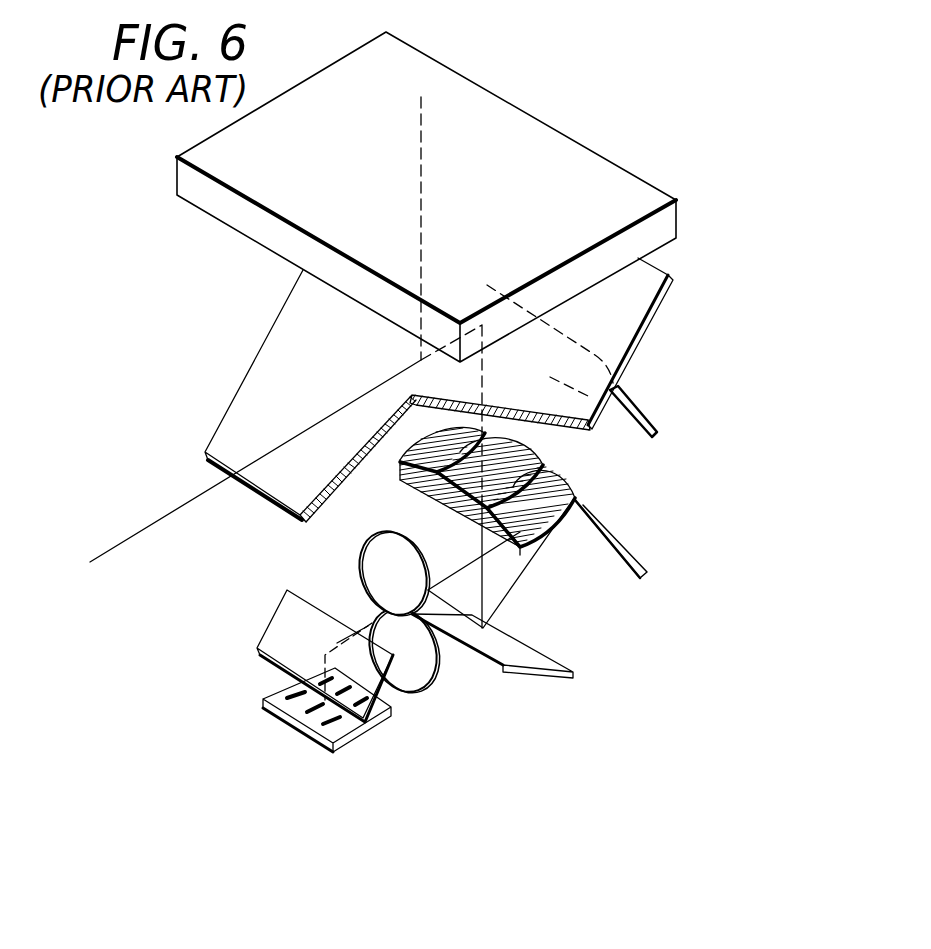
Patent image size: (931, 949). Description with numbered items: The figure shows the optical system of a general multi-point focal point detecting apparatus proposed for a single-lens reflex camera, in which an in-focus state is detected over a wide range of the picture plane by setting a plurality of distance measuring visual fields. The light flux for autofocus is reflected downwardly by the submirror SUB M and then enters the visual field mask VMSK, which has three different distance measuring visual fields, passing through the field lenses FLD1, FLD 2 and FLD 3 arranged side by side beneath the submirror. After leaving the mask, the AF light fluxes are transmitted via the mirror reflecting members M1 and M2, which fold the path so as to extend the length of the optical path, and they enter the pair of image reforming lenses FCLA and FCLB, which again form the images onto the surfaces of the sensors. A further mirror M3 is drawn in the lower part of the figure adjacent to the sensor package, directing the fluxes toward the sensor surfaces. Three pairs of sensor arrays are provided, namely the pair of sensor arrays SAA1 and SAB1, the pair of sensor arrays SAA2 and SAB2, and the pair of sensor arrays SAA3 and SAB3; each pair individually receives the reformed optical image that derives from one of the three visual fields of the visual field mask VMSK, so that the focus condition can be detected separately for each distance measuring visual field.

The submirror SUB M is at (635, 405).
The field lens FLD1 is at (403, 460).
The field lens FLD 2 is at (505, 464).
The field lens FLD 3 is at (548, 484).
The image reforming lens FCLA is at (377, 535).
The image reforming lens FCLB is at (424, 684).
The visual field mask VMSK is at (498, 535).
The mirror reflecting member M1 is at (570, 667).
The mirror reflecting member M2 is at (643, 572).
The mirror 3 M3 is at (285, 602).
The sensor array SAA1 is at (335, 723).
The sensor array SAA2 is at (307, 712).
The sensor array SAA3 is at (287, 697).
The sensor array SAB1 is at (367, 702).
The sensor array SAB2 is at (352, 689).
The sensor array SAB3 is at (320, 683).